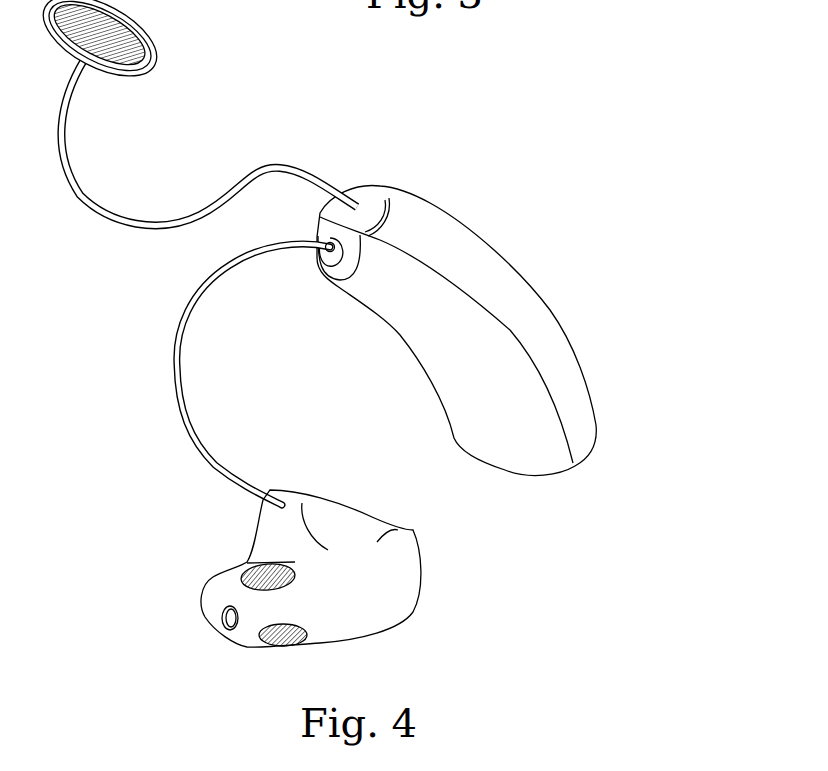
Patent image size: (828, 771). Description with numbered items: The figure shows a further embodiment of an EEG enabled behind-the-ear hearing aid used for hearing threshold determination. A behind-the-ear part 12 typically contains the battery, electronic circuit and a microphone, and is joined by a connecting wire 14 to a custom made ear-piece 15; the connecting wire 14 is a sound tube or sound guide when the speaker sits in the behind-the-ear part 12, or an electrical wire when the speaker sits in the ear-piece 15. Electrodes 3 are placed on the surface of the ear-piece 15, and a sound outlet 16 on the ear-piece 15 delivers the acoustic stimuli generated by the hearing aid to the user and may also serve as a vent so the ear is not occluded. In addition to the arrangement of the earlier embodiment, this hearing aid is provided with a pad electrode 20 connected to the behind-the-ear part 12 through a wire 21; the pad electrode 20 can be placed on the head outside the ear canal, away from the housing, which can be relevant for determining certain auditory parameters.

The behind-the-ear part 12 is at (550, 307).
The connecting wire 14 is at (173, 365).
The ear-piece 15 is at (260, 528).
The sound outlet 16 is at (220, 620).
The pad electrode 20 is at (160, 43).
The wire 21 is at (77, 103).
The electrodes 3 is at (247, 563).